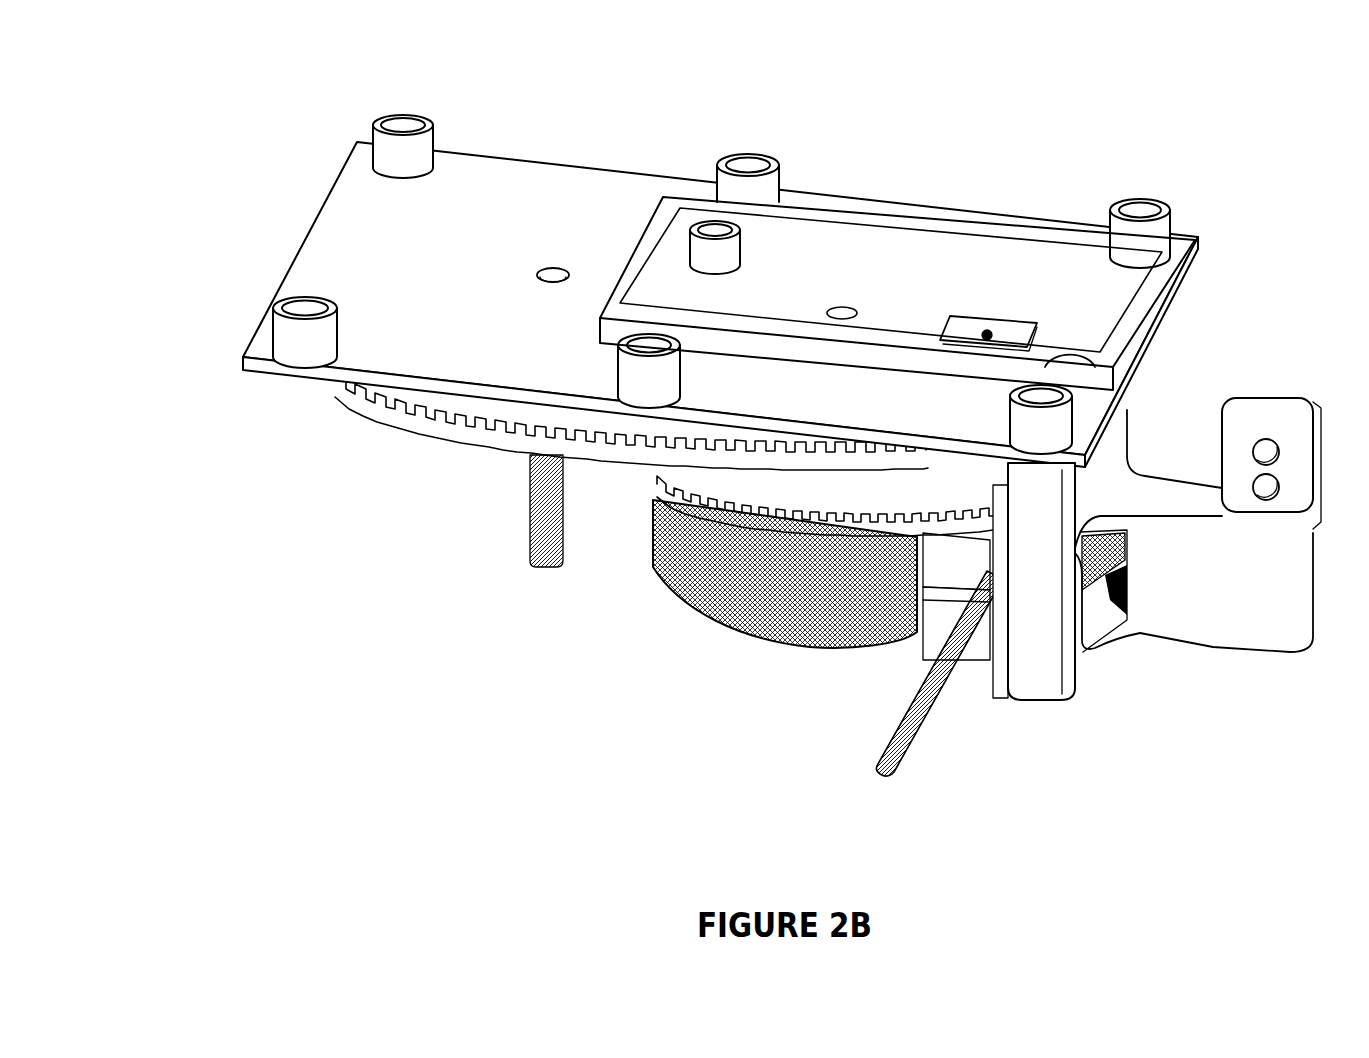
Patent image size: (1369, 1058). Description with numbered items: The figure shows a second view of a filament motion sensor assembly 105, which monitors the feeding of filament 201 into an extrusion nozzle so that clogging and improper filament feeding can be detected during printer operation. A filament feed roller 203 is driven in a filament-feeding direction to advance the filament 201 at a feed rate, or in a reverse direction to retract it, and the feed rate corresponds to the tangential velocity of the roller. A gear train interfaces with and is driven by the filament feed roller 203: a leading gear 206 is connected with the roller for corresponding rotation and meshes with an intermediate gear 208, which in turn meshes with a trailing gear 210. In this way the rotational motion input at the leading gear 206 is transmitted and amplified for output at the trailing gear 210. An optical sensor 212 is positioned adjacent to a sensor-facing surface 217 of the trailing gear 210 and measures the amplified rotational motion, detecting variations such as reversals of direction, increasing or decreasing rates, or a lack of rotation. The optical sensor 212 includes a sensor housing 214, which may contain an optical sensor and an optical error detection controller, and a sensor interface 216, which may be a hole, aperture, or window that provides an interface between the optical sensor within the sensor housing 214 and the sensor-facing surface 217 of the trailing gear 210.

The filament motion sensor assembly 105 is at (158, 110).
The filament 201 is at (880, 738).
The filament feed roller 203 is at (800, 597).
The leading gear 206 is at (828, 493).
The intermediate gear 208 is at (390, 436).
The trailing gear 210 is at (744, 452).
The optical sensor 212 is at (432, 258).
The sensor housing 214 is at (785, 306).
The sensor interface 216 is at (949, 312).
The sensor-facing surface 217 is at (988, 331).